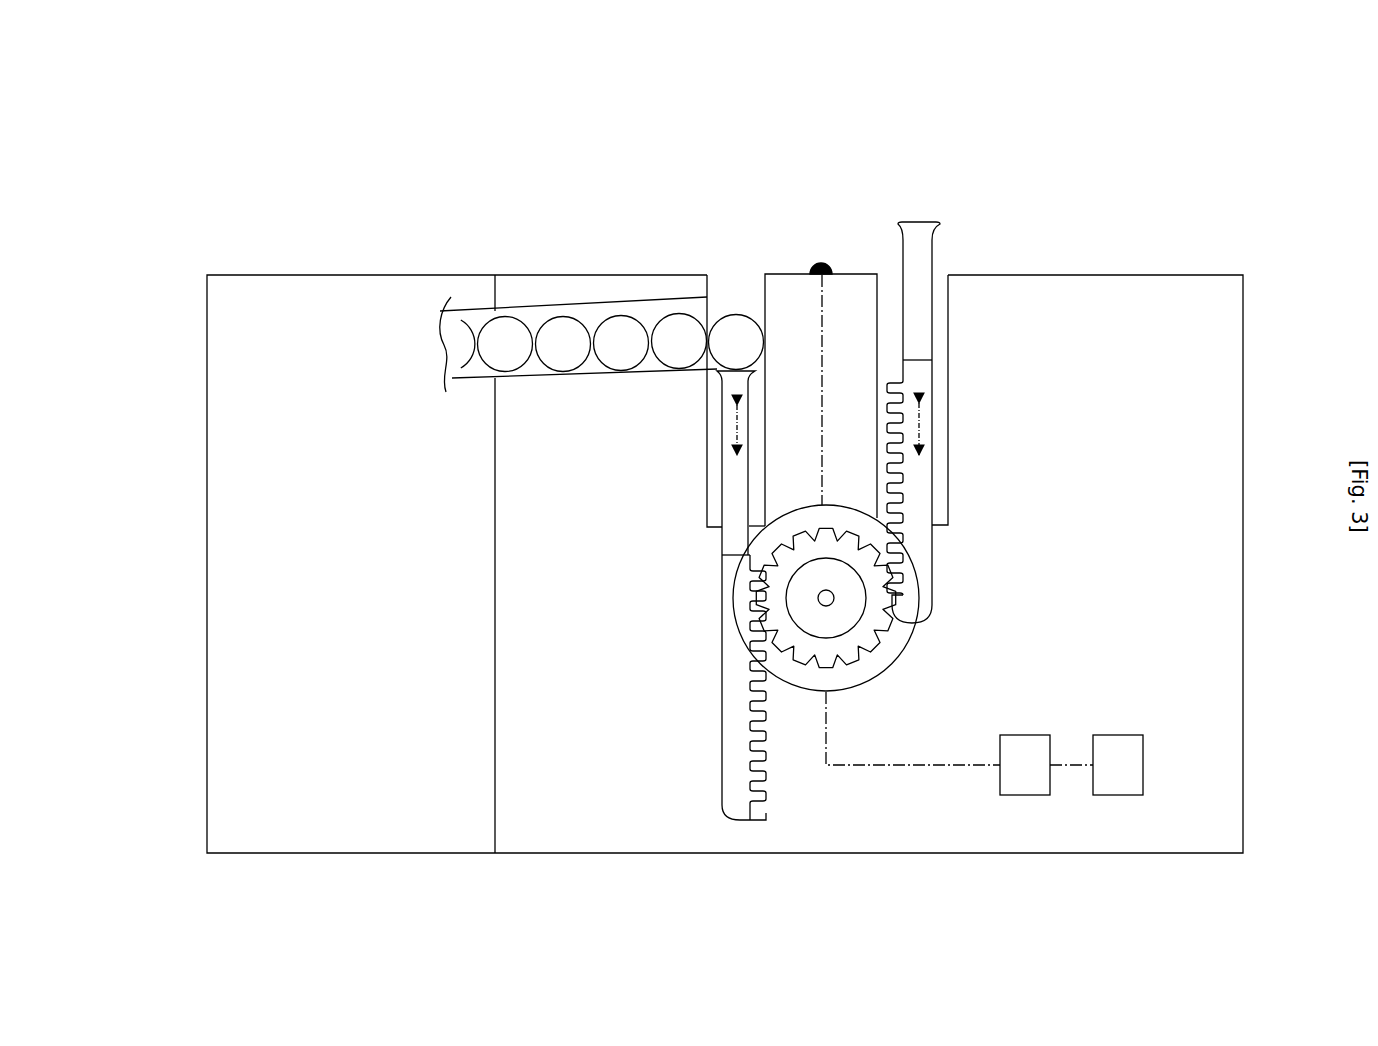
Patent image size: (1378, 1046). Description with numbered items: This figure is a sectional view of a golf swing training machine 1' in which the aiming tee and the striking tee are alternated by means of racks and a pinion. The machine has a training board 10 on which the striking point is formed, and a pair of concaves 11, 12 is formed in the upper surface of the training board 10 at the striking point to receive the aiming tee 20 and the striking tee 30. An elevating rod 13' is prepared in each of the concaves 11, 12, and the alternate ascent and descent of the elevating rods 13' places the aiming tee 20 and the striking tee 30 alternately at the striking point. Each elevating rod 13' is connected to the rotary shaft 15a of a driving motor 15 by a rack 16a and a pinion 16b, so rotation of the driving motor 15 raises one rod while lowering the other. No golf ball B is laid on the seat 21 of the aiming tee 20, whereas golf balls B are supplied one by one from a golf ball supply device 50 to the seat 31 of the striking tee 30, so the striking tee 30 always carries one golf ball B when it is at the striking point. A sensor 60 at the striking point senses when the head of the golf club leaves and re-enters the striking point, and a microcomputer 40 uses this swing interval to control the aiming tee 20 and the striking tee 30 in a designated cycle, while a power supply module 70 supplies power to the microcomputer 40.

The golf swing training machine 1' is at (521, 145).
The training board 10 is at (1100, 273).
The concave 11 is at (945, 277).
The concave 12 is at (717, 285).
The elevating rod 13' is at (802, 590).
The driving motor 15 is at (853, 672).
The rotary shaft 15a is at (834, 597).
The rack 16a is at (750, 690).
The pinion 16b is at (870, 632).
The aiming tee 20 is at (915, 270).
The seat 21 is at (940, 225).
The striking tee 30 is at (732, 437).
The seat 31 is at (705, 370).
The microcomputer 40 is at (1022, 785).
The golf ball supply device 50 is at (320, 300).
The sensor 60 is at (819, 266).
The power supply module 70 is at (1112, 783).
The golf ball B is at (742, 314).